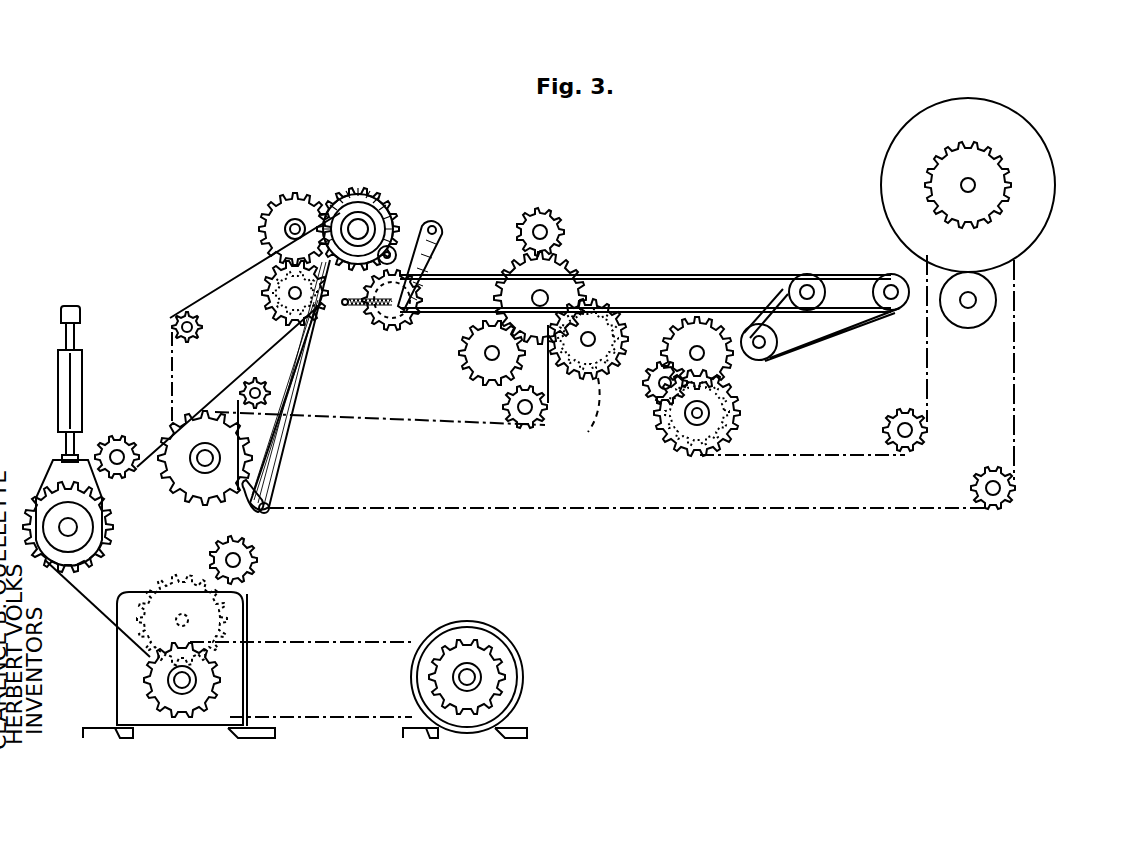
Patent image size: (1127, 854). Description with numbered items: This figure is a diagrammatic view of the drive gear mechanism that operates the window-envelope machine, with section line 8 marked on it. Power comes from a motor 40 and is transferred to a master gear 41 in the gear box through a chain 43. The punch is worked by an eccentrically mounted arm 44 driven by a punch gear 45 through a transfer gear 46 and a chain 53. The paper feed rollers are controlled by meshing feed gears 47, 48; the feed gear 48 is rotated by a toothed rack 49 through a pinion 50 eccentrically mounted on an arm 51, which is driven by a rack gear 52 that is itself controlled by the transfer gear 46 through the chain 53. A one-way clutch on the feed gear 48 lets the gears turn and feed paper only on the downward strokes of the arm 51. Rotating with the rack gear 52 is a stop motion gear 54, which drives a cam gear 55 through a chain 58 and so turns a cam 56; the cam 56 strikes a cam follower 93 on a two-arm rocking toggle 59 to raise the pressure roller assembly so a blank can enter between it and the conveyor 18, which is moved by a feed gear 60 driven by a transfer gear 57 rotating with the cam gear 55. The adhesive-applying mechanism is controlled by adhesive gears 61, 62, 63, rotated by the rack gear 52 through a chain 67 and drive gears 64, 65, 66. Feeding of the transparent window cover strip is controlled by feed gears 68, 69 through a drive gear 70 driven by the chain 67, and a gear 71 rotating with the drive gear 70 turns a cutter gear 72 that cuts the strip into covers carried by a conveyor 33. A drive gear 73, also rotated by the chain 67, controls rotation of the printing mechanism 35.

The section line 8- 8 is at (205, 197).
The conveyor 18 is at (651, 278).
The conveyor 33 is at (816, 348).
The printing mechanism 35 is at (1040, 162).
The motor 40 is at (445, 626).
The master gear 41 is at (210, 679).
The chain 43 is at (326, 640).
The eccentrically mounted arm 44 is at (83, 374).
The punch gear 45 is at (106, 520).
The transfer gear 46 is at (172, 586).
The feed gear 47 is at (294, 200).
The feed gear 48 is at (268, 286).
The toothed rack 49 is at (300, 375).
The pinion 50 is at (272, 312).
The arm 51 is at (262, 500).
The rack gear 52 is at (250, 460).
The chain 53 is at (82, 597).
The stop motion gear 54 is at (201, 410).
The cam gear 55 is at (392, 222).
The cam 56 is at (372, 212).
The transfer gear 57 is at (348, 190).
The chain 58 is at (168, 343).
The toggle 59 is at (440, 254).
The feed gear 60 is at (378, 322).
The adhesive gear 61 is at (556, 222).
The adhesive gear 62 is at (560, 270).
The adhesive gear 63 is at (470, 352).
The drive gear 64 is at (580, 382).
The drive gear 65 is at (579, 420).
The drive gear 66 is at (576, 284).
The chain 67 is at (419, 422).
The feed gear 68 is at (650, 386).
The feed gear 69 is at (704, 400).
The drive gear 70 is at (724, 437).
The gear 71 is at (712, 410).
The cutter gear 72 is at (703, 330).
The drive gear 73 is at (1000, 186).
The cam follower 93 is at (468, 222).